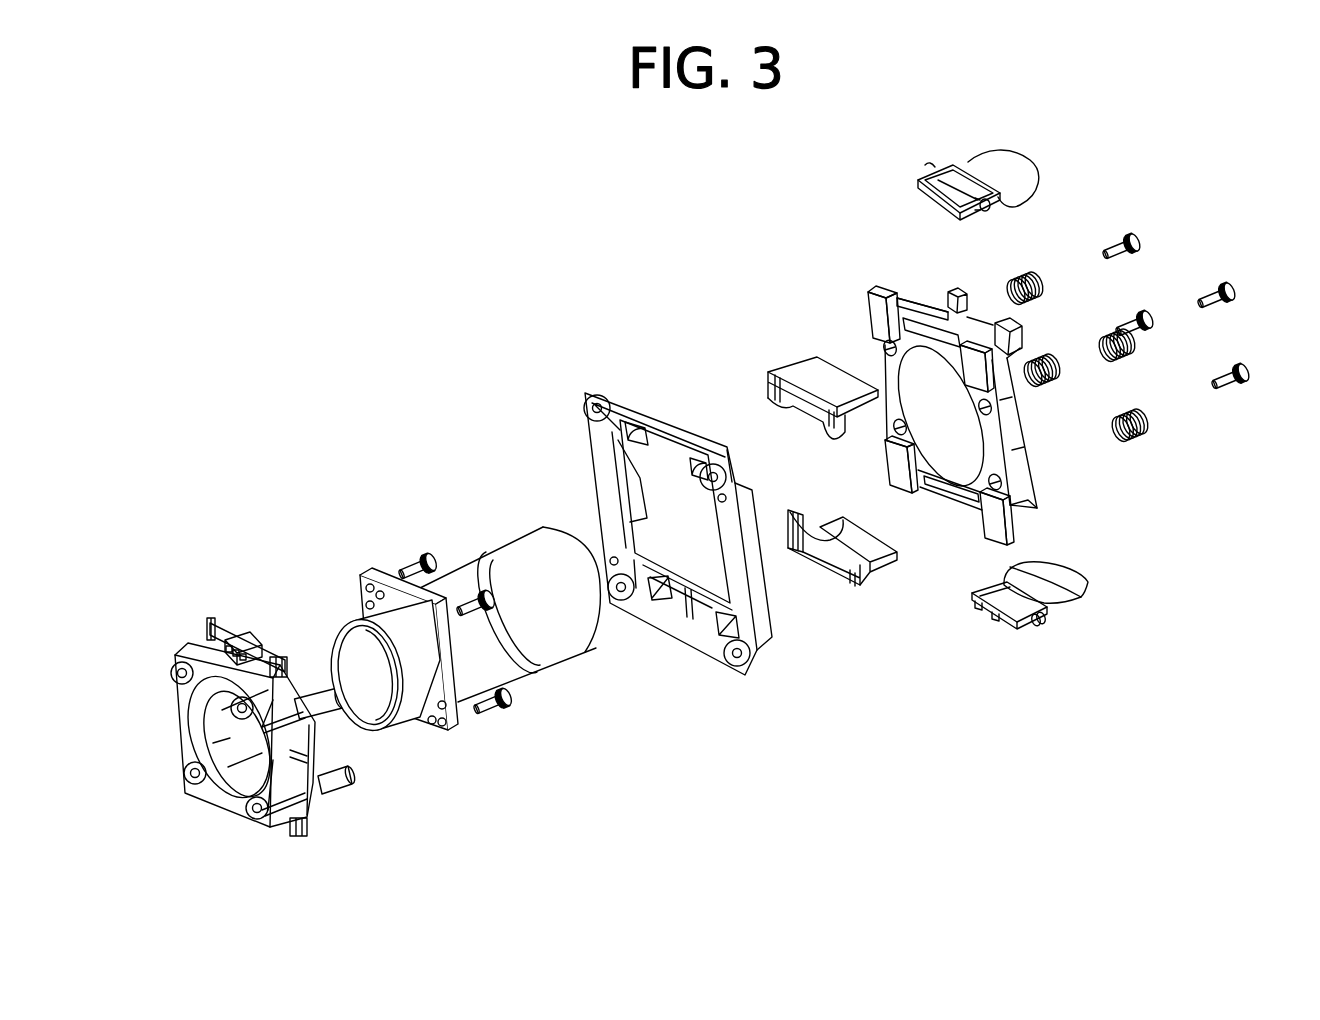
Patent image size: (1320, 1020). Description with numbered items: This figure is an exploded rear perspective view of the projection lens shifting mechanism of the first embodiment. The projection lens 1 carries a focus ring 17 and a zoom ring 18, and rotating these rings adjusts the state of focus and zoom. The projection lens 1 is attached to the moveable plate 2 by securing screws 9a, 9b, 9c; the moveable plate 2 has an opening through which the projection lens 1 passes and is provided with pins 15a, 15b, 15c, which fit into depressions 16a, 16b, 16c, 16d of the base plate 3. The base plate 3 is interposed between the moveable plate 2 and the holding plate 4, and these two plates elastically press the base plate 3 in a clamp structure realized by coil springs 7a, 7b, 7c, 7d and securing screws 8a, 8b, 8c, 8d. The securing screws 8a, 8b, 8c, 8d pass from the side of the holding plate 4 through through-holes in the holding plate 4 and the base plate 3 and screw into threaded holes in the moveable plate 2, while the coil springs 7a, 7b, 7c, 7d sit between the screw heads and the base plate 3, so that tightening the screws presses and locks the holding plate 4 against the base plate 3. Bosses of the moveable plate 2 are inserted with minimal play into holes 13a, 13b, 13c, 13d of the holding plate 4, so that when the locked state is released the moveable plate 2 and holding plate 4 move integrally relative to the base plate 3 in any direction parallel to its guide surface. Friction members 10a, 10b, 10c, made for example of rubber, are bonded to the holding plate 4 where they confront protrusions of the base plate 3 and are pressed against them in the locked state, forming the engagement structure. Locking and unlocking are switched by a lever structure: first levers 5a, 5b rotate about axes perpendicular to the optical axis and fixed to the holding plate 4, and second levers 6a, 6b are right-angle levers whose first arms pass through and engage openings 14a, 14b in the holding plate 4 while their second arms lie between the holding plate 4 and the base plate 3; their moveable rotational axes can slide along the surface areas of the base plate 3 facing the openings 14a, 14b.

The projection lens 1 is at (449, 580).
The moveable plate 2 is at (180, 660).
The base plate 3 is at (650, 403).
The holding plate 4 is at (970, 335).
The first lever 5a is at (1012, 168).
The first lever 5b is at (1068, 603).
The second lever 6a is at (800, 372).
The second lever 6b is at (845, 574).
The coil spring 7a is at (1104, 338).
The coil spring 7b is at (1143, 439).
The coil spring 7c is at (1020, 277).
The coil spring 7d is at (1060, 377).
The securing screw 8a is at (1202, 301).
The securing screw 8b is at (1247, 388).
The securing screw 8c is at (1106, 250).
The securing screw 8d is at (1152, 332).
The securing screw 9a is at (488, 590).
The securing screw 9b is at (505, 709).
The securing screw 9c is at (420, 564).
The friction member 10a is at (975, 380).
The friction member 10b is at (893, 472).
The friction member 10c is at (905, 300).
The hole 13a is at (1012, 430).
The hole 13b is at (1012, 506).
The hole 13c is at (880, 318).
The hole 13d is at (905, 432).
The opening 14a is at (917, 322).
The opening 14b is at (950, 488).
The pin 15a is at (283, 657).
The pin 15b is at (305, 830).
The pin 15c is at (233, 625).
The depression 16a is at (697, 460).
The depression 16b is at (727, 638).
The depression 16c is at (632, 423).
The depression 16d is at (660, 600).
The focus ring 17 is at (590, 647).
The zoom ring 18 is at (545, 667).